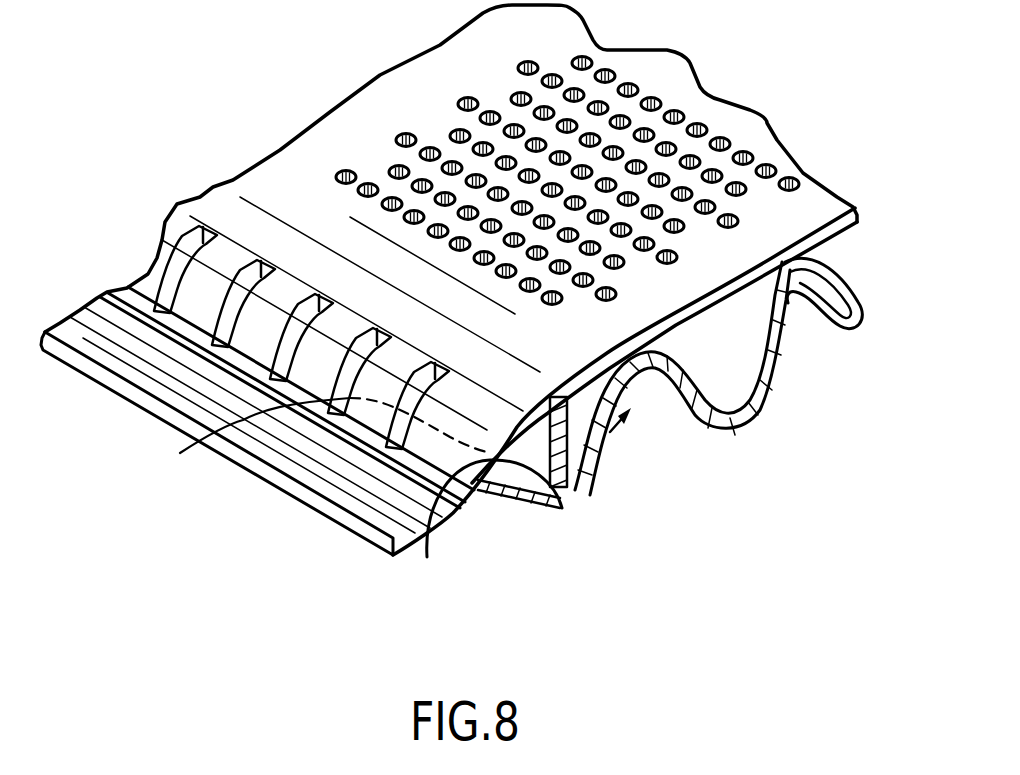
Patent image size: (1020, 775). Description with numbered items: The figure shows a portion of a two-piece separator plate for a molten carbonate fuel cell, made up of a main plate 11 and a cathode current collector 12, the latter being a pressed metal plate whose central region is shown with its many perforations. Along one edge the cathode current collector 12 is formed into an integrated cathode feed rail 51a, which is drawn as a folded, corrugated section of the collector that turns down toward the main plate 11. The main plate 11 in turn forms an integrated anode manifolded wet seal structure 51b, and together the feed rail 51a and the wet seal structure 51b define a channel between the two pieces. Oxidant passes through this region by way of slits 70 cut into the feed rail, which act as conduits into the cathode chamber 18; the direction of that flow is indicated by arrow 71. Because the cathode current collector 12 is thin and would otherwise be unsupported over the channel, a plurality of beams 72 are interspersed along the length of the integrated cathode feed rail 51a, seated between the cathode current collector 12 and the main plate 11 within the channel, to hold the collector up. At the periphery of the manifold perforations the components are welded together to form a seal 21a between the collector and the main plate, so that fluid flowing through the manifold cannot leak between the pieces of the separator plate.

The cathode chamber 18 is at (719, 368).
The seal 21a is at (88, 372).
The slits 70 is at (178, 260).
The arrow 71 is at (247, 428).
The integrated cathode feed rail 51a is at (420, 510).
The beams 72 is at (530, 463).
The main plate 11 is at (547, 493).
The integrated anode manifolded wet seal structure 51b is at (577, 457).
The cathode current collector 12 is at (747, 243).